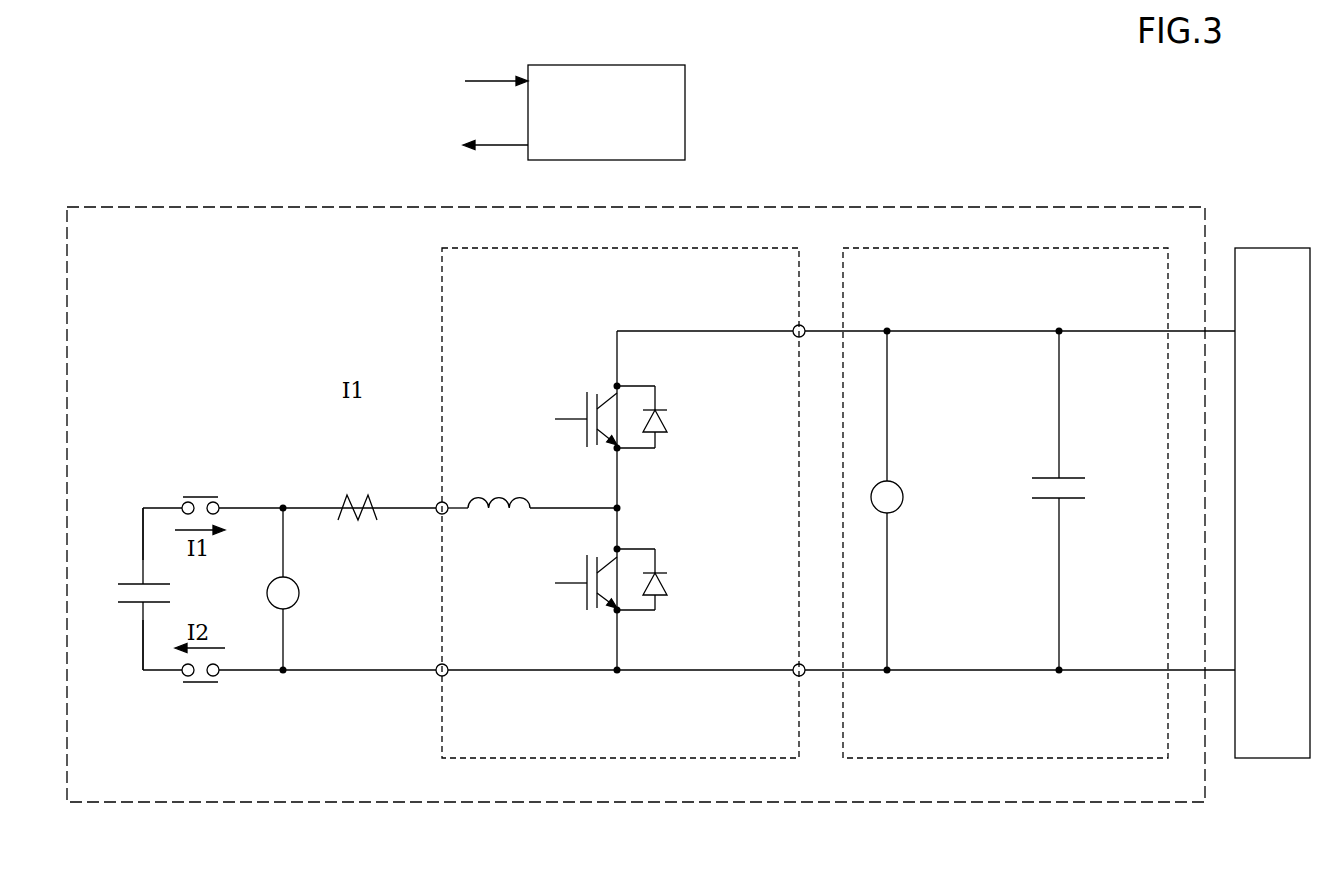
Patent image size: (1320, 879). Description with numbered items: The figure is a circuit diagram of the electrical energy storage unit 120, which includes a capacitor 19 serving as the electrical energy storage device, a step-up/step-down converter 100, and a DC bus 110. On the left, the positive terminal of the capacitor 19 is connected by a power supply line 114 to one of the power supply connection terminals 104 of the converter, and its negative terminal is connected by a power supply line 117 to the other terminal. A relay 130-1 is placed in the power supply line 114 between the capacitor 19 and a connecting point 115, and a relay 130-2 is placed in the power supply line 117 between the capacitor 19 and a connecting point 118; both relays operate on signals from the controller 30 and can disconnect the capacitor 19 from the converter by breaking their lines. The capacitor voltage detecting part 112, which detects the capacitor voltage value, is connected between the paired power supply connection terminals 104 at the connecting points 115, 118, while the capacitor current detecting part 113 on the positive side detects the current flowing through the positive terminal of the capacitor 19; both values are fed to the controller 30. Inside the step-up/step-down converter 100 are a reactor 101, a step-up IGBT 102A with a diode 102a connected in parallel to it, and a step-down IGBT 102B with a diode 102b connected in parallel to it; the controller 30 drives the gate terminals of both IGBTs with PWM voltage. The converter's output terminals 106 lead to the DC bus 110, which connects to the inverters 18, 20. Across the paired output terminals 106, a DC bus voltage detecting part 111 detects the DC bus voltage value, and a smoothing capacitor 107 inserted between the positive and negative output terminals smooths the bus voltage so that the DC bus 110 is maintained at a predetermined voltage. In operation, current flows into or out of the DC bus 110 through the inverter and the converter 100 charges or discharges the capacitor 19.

The controller 30 is at (625, 65).
The electrical energy storage unit 120 is at (1097, 207).
The step-up/step-down converter 100 is at (695, 248).
The DC bus 110 is at (1137, 248).
The inverter 18 is at (1272, 475).
The inverter 20 is at (1273, 248).
The capacitor 19 is at (170, 592).
The power supply line 114 is at (143, 543).
The power supply line 117 is at (143, 633).
The relay 130-1 is at (190, 500).
The relay 130-2 is at (187, 685).
The connecting point 115 is at (283, 500).
The connecting point 118 is at (283, 677).
The capacitor voltage detecting part 112 is at (300, 590).
The capacitor current detecting part 113 is at (357, 495).
The power supply connection terminals 104 is at (437, 513).
The reactor 101 is at (507, 497).
The step-down IGBT 102B is at (593, 390).
The diode 102b is at (668, 420).
The step-up IGBT 102A is at (590, 618).
The diode 102a is at (668, 583).
The output terminals 106 is at (796, 330).
The DC bus voltage detecting part 111 is at (903, 497).
The smoothing capacitor 107 is at (1085, 490).